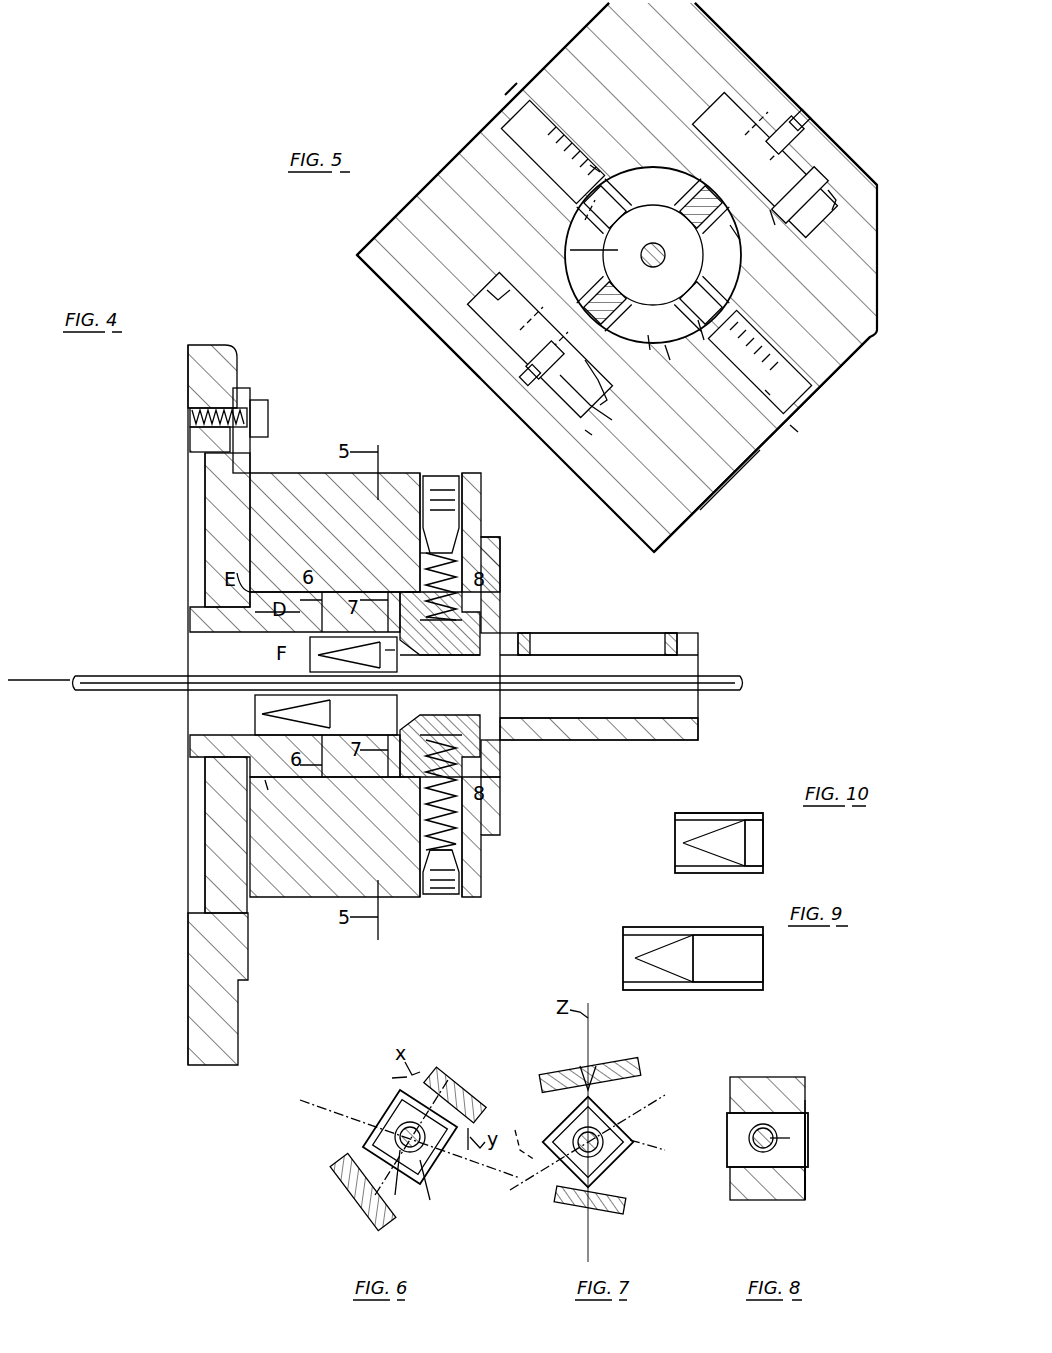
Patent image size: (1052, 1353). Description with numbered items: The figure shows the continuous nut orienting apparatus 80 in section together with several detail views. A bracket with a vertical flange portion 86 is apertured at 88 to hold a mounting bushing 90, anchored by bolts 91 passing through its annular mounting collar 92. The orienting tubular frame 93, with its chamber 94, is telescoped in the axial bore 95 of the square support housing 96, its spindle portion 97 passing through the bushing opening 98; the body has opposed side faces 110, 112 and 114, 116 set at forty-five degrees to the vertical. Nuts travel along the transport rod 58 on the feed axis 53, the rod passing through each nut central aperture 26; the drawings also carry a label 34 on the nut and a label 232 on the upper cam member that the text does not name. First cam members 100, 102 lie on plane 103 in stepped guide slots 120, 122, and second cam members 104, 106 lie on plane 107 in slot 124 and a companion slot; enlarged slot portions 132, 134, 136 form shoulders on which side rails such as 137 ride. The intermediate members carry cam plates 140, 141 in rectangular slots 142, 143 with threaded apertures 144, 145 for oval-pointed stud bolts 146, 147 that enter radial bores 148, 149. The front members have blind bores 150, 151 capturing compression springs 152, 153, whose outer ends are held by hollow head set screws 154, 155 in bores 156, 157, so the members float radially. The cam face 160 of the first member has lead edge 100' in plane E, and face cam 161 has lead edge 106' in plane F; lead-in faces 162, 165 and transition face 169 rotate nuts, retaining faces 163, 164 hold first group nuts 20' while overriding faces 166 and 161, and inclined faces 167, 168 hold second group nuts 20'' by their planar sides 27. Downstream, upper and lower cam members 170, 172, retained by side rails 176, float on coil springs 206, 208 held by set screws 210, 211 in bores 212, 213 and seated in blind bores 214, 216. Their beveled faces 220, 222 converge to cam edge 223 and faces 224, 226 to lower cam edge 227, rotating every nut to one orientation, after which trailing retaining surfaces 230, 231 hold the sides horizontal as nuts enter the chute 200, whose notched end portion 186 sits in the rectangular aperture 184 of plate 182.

In FIG. 6, the first group nut 20' is at (332, 1123).
In FIG. 7, the first group nut 20' is at (541, 1101).
In FIG. 6, the second group nut 20'' is at (416, 1215).
In FIG. 7, the second group nut 20'' is at (670, 1168).
In FIG. 6, the central aperture 26 is at (400, 1160).
In FIG. 8, the central aperture 26 is at (790, 1134).
In FIG. 8, the fastener sides 27 is at (800, 1112).
In FIG. 8, the side face 34 is at (808, 1178).
In FIG. 4, the machine feed axis 53 is at (42, 678).
In FIG. 5, the transport rod 58 is at (665, 255).
In FIG. 4, the transport rod 58 is at (105, 676).
In FIG. 6, the transport rod 58 is at (420, 1150).
In FIG. 7, the transport rod 58 is at (600, 1155).
In FIG. 8, the transport rod 58 is at (780, 1148).
In FIG. 4, the nut orienting apparatus 80 is at (323, 409).
In FIG. 4, the vertical flange portion 86 is at (195, 374).
In FIG. 4, the aperture 88 is at (190, 455).
In FIG. 4, the mounting bushing 90 is at (255, 452).
In FIG. 4, the bolts 91 is at (268, 408).
In FIG. 4, the annular mounting collar 92 is at (245, 388).
In FIG. 5, the orienting tubular frame 93 is at (650, 175).
In FIG. 4, the orienting tubular frame 93 is at (283, 600).
In FIG. 5, the chamber 94 is at (600, 258).
In FIG. 4, the chamber 94 is at (200, 632).
In FIG. 5, the axial bore 95 is at (700, 170).
In FIG. 4, the axial bore 95 is at (258, 778).
In FIG. 5, the support housing 96 is at (440, 170).
In FIG. 4, the support housing 96 is at (318, 472).
In FIG. 4, the spindle portion 97 is at (190, 750).
In FIG. 4, the bushing opening 98 is at (205, 760).
In FIG. 5, the first cam member 100 is at (747, 304).
In FIG. 4, the first cam member 100 is at (440, 702).
In FIG. 6, the first cam member 100 is at (410, 1170).
In FIG. 4, the lead edge of cam face 100' is at (199, 717).
In FIG. 5, the first cam member 102 is at (640, 200).
In FIG. 9, the first cam member 102 is at (749, 992).
In FIG. 6, the first cam member 102 is at (360, 1084).
In FIG. 5, the oriented plane 103 is at (800, 440).
In FIG. 5, the second cam member 104 is at (645, 340).
In FIG. 6, the second cam member 104 is at (352, 1174).
In FIG. 7, the second cam member 104 is at (520, 1150).
In FIG. 5, the second cam member 106 is at (733, 299).
In FIG. 4, the second cam member 106 is at (440, 665).
In FIG. 6, the second cam member 106 is at (478, 1073).
In FIG. 7, the second cam member 106 is at (667, 1138).
In FIG. 4, the lead edge of face cam 106' is at (265, 652).
In FIG. 5, the oriented plane 107 is at (803, 112).
In FIG. 5, the body side face 110 is at (840, 355).
In FIG. 5, the body side face 112 is at (551, 65).
In FIG. 5, the body side face 114 is at (385, 283).
In FIG. 5, the body side face 116 is at (742, 48).
In FIG. 5, the stepped guide slot 120 is at (670, 365).
In FIG. 5, the stepped guide slot 122 is at (598, 237).
In FIG. 5, the stepped guide slot 124 is at (600, 290).
In FIG. 5, the enlarged outer slot portion 132 is at (618, 185).
In FIG. 5, the enlarged outer slot portion 134 is at (605, 375).
In FIG. 5, the enlarged outer slot portion 136 is at (735, 228).
In FIG. 9, the side rail 137 is at (636, 926).
In FIG. 5, the cam plate 140 is at (500, 280).
In FIG. 5, the cam plate 141 is at (795, 195).
In FIG. 5, the outer rectangular slot 142 is at (588, 432).
In FIG. 5, the outer rectangular slot 143 is at (830, 205).
In FIG. 5, the threaded aperture 144 is at (545, 330).
In FIG. 5, the threaded aperture 145 is at (770, 212).
In FIG. 5, the stud bolt 146 is at (528, 358).
In FIG. 5, the stud bolt 147 is at (775, 158).
In FIG. 5, the radial bore 148 is at (612, 418).
In FIG. 5, the radial bore 149 is at (725, 165).
In FIG. 5, the blind bore 150 is at (703, 340).
In FIG. 5, the blind bore 151 is at (575, 210).
In FIG. 5, the compression spring 152 is at (750, 368).
In FIG. 5, the compression spring 153 is at (565, 118).
In FIG. 5, the hollow head set screw 154 is at (796, 432).
In FIG. 5, the hollow head set screw 155 is at (505, 95).
In FIG. 5, the bore 156 is at (782, 335).
In FIG. 5, the bore 157 is at (600, 145).
In FIG. 4, the cam face 160 is at (262, 708).
In FIG. 4, the face cam 161 is at (335, 650).
In FIG. 6, the face cam 161 is at (440, 1076).
In FIG. 4, the triangular lead-in cam face 162 is at (340, 740).
In FIG. 9, the triangular lead-in cam face 162 is at (640, 962).
In FIG. 6, the triangular lead-in cam face 162 is at (432, 1165).
In FIG. 4, the rectangular retaining face 163 is at (380, 722).
In FIG. 9, the rectangular retaining face 164 is at (758, 958).
In FIG. 4, the triangular lead-in cam face 165 is at (395, 655).
In FIG. 6, the cam face 166 is at (370, 1180).
In FIG. 7, the rectangular retaining face 167 is at (580, 1208).
In FIG. 4, the rectangular face 168 is at (415, 585).
In FIG. 7, the rectangular face 168 is at (640, 1098).
In FIG. 9, the triangular transition cam face 169 is at (685, 956).
In FIG. 4, the upper cam member 170 is at (488, 630).
In FIG. 10, the upper cam member 170 is at (749, 802).
In FIG. 7, the upper cam member 170 is at (606, 1042).
In FIG. 8, the upper cam member 170 is at (808, 1082).
In FIG. 4, the lower cam member 172 is at (500, 780).
In FIG. 8, the lower cam member 172 is at (806, 1192).
In FIG. 10, the side rails 176 is at (705, 812).
In FIG. 4, the vertically disposed plate 182 is at (500, 557).
In FIG. 4, the rectangular aperture 184 is at (520, 645).
In FIG. 4, the notched end portion 186 is at (500, 760).
In FIG. 4, the nut aligning chute 200 is at (630, 746).
In FIG. 4, the upper compression coil spring 206 is at (450, 560).
In FIG. 4, the lower compression coil spring 208 is at (455, 800).
In FIG. 4, the set screw 210 is at (445, 480).
In FIG. 4, the set screw 211 is at (445, 897).
In FIG. 4, the bore 212 is at (428, 522).
In FIG. 4, the bore 213 is at (455, 838).
In FIG. 4, the blind bore 214 is at (455, 612).
In FIG. 4, the blind bore 216 is at (455, 780).
In FIG. 10, the upper camming face 220 is at (682, 828).
In FIG. 7, the upper camming face 220 is at (552, 1082).
In FIG. 10, the upper camming face 222 is at (682, 860).
In FIG. 7, the upper camming face 222 is at (632, 1082).
In FIG. 4, the cam edge 223 is at (440, 623).
In FIG. 7, the cam edge 223 is at (598, 1065).
In FIG. 7, the lower camming face 224 is at (588, 1215).
In FIG. 7, the lower camming face 226 is at (605, 1200).
In FIG. 4, the lower cam edge 227 is at (440, 746).
In FIG. 7, the lower cam edge 227 is at (603, 1200).
In FIG. 4, the upper trailing nut retaining surface 230 is at (535, 650).
In FIG. 10, the upper trailing nut retaining surface 230 is at (765, 830).
In FIG. 8, the upper trailing nut retaining surface 230 is at (748, 1105).
In FIG. 4, the lower trailing nut retaining surface 231 is at (530, 735).
In FIG. 8, the lower trailing nut retaining surface 231 is at (762, 1180).
In FIG. 10, the wedge face 232 is at (682, 843).